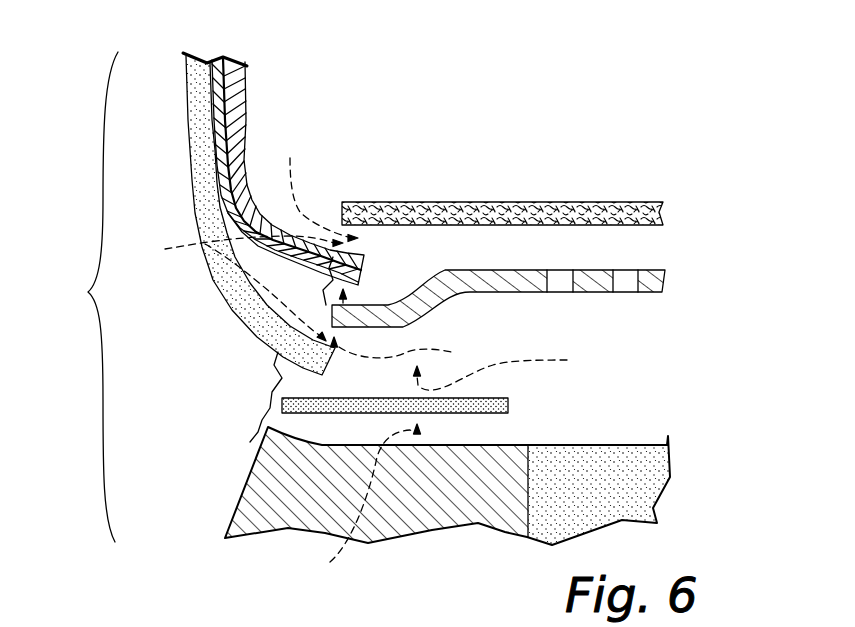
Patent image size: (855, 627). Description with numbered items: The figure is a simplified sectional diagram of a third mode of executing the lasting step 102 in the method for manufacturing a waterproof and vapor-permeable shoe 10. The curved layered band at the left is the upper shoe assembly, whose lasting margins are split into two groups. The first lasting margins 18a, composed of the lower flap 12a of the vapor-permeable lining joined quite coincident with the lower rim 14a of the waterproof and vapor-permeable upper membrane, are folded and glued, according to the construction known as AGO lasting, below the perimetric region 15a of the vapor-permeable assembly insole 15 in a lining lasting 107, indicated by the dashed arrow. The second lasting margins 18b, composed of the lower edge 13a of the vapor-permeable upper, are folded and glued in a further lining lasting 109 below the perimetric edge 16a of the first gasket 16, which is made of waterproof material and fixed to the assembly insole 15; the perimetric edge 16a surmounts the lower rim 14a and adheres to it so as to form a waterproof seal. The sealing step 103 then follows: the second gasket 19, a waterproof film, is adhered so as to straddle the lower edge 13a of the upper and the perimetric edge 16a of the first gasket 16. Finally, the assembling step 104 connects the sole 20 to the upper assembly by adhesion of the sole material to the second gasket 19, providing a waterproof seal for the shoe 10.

The waterproof and vapor-permeable shoe 10 is at (86, 297).
The lower flap of the lining 12a is at (393, 173).
The lower edge of the upper 13a is at (268, 347).
The lower rim of the upper membrane 14a is at (393, 173).
The vapor-permeable assembly insole 15 is at (603, 203).
The perimetric region of the assembly insole 15a is at (322, 171).
The first gasket 16 is at (547, 266).
The perimetric edge of the first gasket 16a is at (404, 332).
The first lasting margins 18a is at (372, 252).
The second lasting margins 18b is at (236, 242).
The second gasket 19 is at (510, 399).
The sole 20 is at (230, 505).
The lasting step 102 is at (234, 287).
The sealing step 103 is at (512, 366).
The assembling step 104 is at (354, 500).
The lining lasting 107 is at (317, 186).
The lining lasting 109 is at (411, 352).